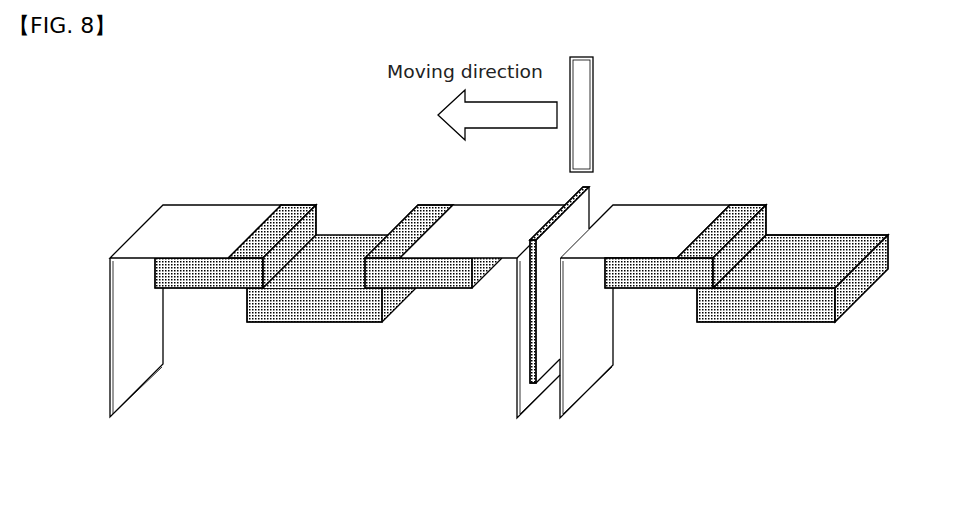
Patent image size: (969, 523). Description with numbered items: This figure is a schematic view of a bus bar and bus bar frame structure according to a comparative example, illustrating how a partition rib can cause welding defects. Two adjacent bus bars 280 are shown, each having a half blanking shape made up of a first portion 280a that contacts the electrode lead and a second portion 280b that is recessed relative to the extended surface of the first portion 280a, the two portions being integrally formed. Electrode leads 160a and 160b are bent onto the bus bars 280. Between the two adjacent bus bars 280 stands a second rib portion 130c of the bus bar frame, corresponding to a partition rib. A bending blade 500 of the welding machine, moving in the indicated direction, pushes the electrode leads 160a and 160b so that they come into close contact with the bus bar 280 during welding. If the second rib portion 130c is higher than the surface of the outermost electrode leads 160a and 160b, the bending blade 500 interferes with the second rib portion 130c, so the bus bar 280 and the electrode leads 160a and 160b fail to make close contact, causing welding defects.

The electrode lead 160a is at (202, 217).
The electrode lead 160b is at (498, 215).
The bus bar 280 is at (657, 280).
The first portion 280a is at (214, 272).
The second portion 280b is at (316, 308).
The second rib portion 130c is at (543, 358).
The bending blade 500 is at (583, 88).